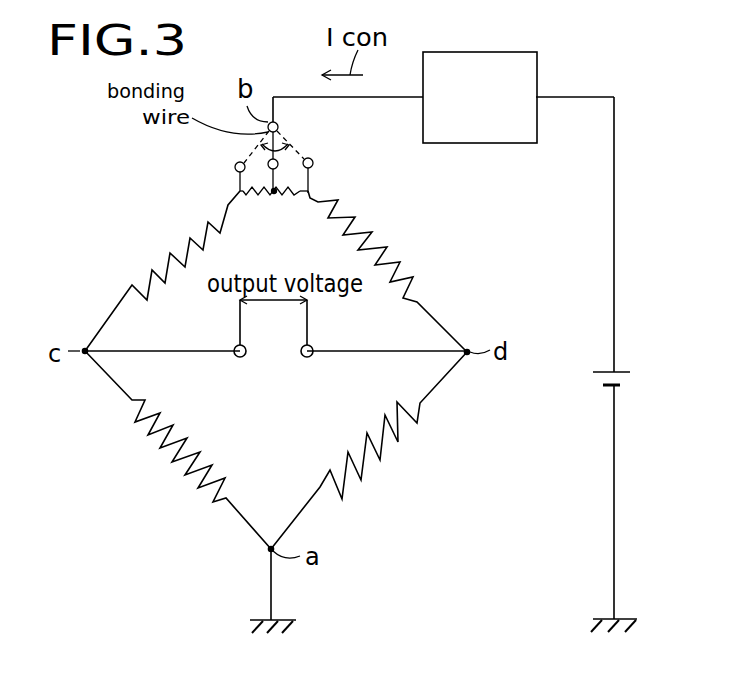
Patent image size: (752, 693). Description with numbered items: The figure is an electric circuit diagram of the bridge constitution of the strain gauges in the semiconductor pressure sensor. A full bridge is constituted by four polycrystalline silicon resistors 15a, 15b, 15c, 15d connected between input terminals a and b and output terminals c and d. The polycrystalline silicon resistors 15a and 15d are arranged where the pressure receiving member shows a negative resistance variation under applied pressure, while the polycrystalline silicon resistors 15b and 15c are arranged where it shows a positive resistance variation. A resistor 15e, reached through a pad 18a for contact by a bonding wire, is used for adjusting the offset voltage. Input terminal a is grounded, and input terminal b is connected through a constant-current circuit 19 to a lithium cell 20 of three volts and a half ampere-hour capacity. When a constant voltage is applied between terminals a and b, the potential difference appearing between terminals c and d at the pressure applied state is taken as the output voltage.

The polycrystalline silicon resistor 15a is at (177, 250).
The polycrystalline silicon resistor 15b is at (398, 253).
The polycrystalline silicon resistor 15c is at (163, 447).
The polycrystalline silicon resistor 15d is at (380, 463).
The resistor 15e is at (254, 198).
The pad 18a is at (313, 163).
The constant-current circuit 19 is at (490, 52).
The lithium cell 20 is at (628, 372).